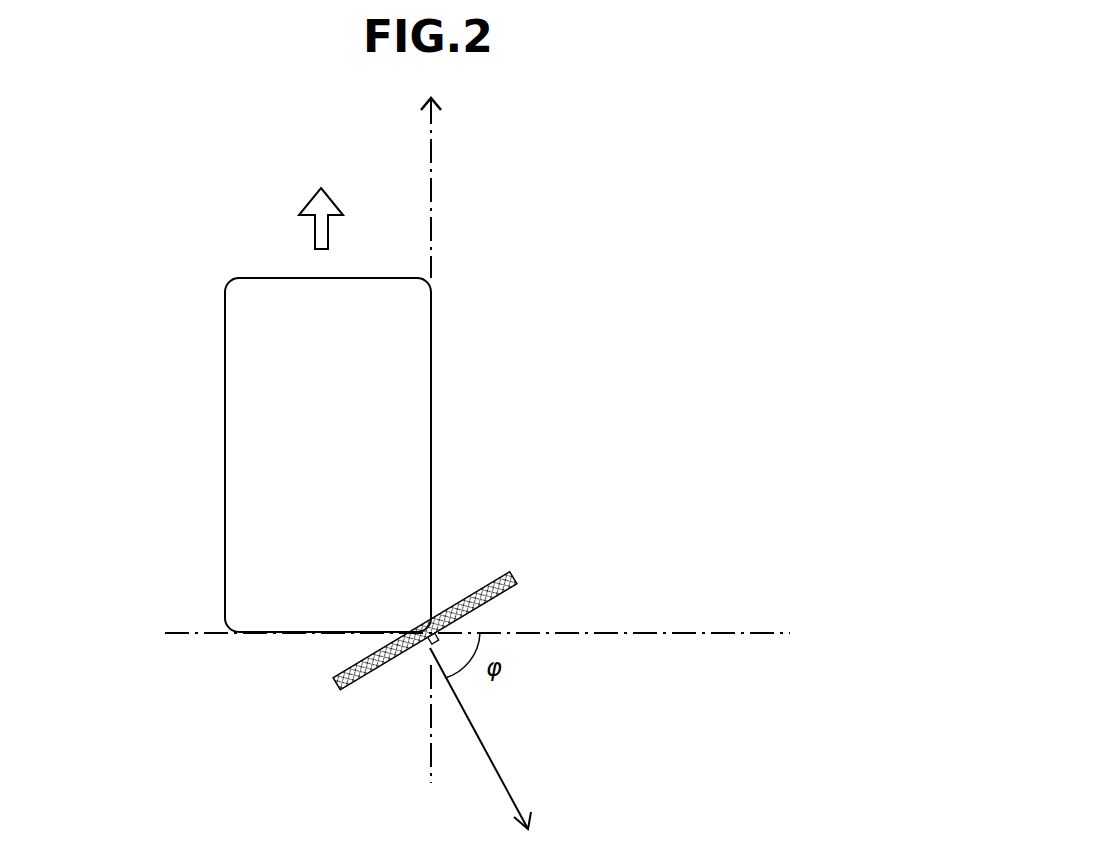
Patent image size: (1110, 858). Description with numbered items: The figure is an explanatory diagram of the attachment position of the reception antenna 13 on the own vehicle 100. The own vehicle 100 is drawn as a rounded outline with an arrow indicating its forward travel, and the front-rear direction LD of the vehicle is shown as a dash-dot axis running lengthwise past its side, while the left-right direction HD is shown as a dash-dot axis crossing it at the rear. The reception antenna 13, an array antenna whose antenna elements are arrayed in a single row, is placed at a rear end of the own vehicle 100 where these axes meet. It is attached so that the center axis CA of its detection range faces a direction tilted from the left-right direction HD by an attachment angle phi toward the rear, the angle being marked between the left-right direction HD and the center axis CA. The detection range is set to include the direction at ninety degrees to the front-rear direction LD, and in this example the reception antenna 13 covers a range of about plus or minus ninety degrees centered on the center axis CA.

The own vehicle 100 is at (226, 370).
The reception antenna 13 is at (512, 578).
The front-rear direction LD is at (432, 201).
The left-right direction HD is at (713, 633).
The center axis CA is at (513, 805).